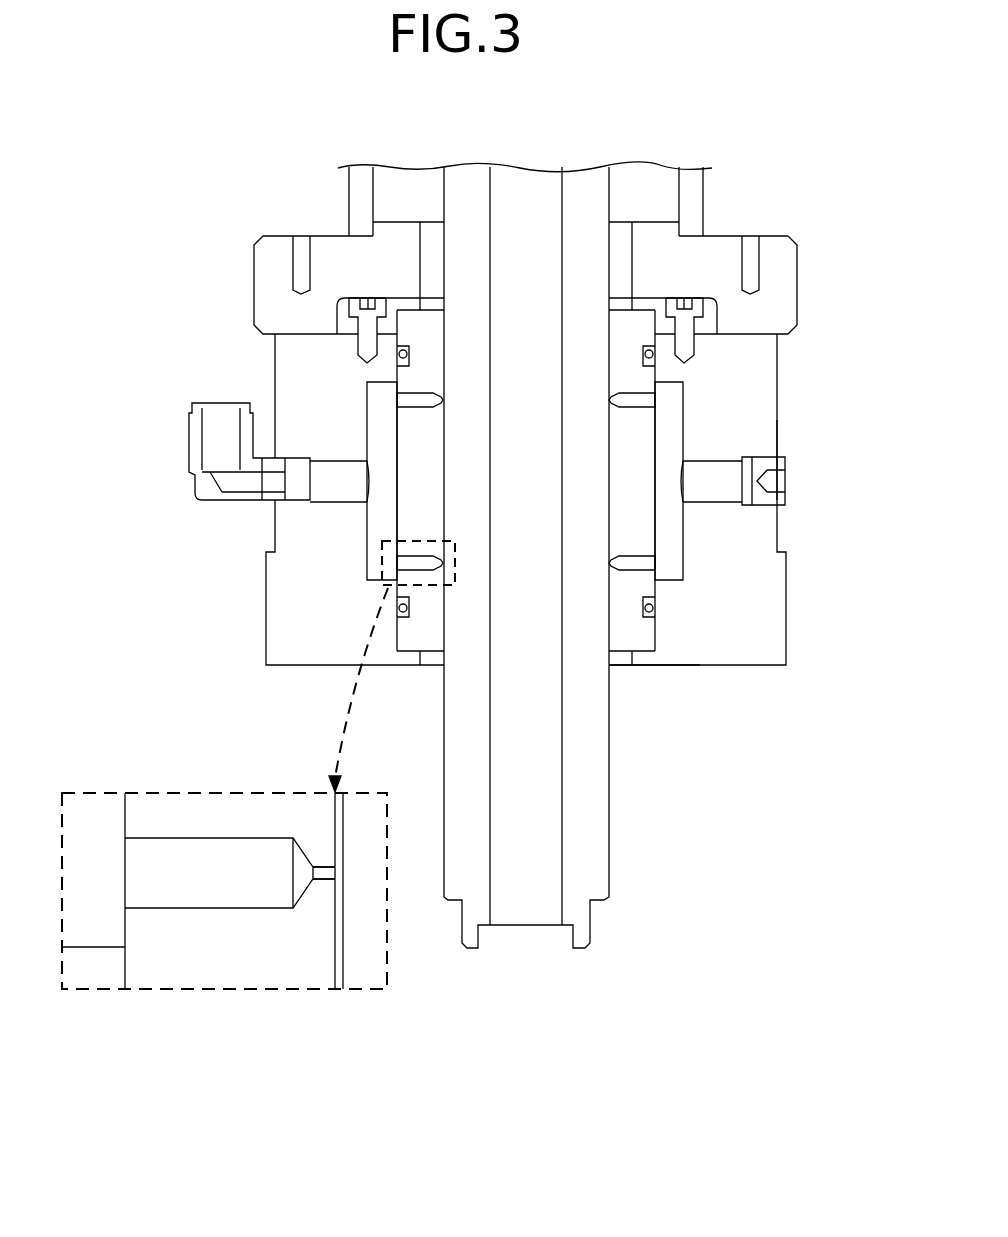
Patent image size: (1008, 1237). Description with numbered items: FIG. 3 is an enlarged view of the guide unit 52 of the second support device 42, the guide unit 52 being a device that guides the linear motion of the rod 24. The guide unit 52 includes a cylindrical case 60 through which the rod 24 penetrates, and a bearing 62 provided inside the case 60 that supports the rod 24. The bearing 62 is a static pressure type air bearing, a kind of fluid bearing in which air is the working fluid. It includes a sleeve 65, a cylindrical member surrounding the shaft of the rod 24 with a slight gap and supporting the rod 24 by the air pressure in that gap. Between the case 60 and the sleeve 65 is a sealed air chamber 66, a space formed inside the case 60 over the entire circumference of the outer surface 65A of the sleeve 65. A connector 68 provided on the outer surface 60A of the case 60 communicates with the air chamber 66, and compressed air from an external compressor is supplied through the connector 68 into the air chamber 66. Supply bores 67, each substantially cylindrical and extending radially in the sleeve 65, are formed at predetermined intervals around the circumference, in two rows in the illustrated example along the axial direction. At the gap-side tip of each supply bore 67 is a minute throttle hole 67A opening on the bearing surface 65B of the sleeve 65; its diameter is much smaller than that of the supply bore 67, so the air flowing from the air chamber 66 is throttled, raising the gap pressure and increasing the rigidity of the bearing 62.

The second support device 42 is at (797, 123).
The outer surface of the case 60A is at (275, 388).
The case 60 is at (786, 570).
The guide unit 52 is at (818, 415).
The bearing 62 is at (668, 624).
The rod 24 is at (462, 876).
The sleeve 65 is at (417, 635).
The outer surface of the sleeve 65A is at (395, 486).
The bearing surface 65B is at (336, 938).
The air chamber 66 is at (383, 515).
The supply bore 67 is at (413, 399).
The throttle hole 67A is at (322, 865).
The connector 68 is at (189, 443).